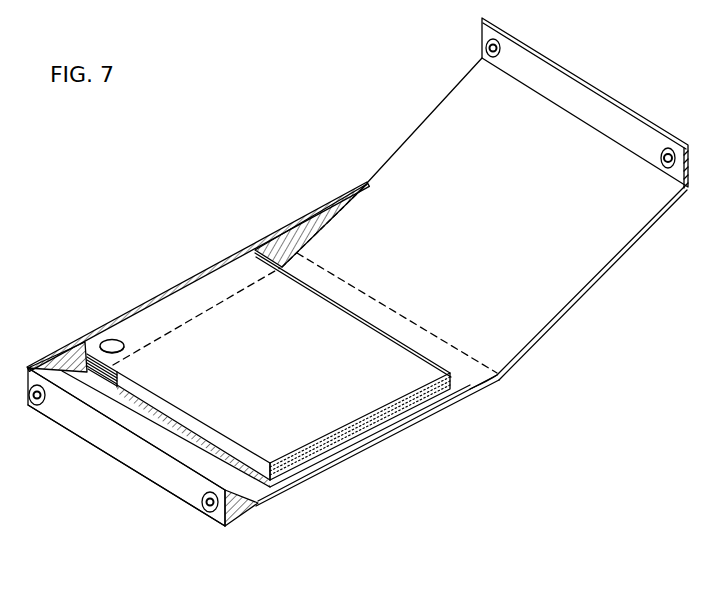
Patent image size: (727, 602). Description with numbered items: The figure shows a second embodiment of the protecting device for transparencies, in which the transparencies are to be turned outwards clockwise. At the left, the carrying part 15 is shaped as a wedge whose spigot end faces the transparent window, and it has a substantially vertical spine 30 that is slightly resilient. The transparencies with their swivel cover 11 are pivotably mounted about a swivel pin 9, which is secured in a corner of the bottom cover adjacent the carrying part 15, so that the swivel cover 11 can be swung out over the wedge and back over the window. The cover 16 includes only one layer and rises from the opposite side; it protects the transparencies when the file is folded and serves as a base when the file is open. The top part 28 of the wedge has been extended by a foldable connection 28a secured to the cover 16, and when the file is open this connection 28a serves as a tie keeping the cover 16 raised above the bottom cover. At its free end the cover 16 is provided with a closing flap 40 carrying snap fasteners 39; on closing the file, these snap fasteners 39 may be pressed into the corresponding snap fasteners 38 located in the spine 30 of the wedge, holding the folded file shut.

The swivel pin 9 is at (107, 347).
The swivel cover 11 is at (157, 323).
The carrying part 15 is at (106, 463).
The cover 16 is at (538, 282).
The top part 28 is at (267, 248).
The foldable connection 28a is at (308, 228).
The spine 30 is at (168, 475).
The snap fasteners 38 is at (35, 405).
The snap fasteners 39 is at (486, 49).
The closing flap 40 is at (593, 108).